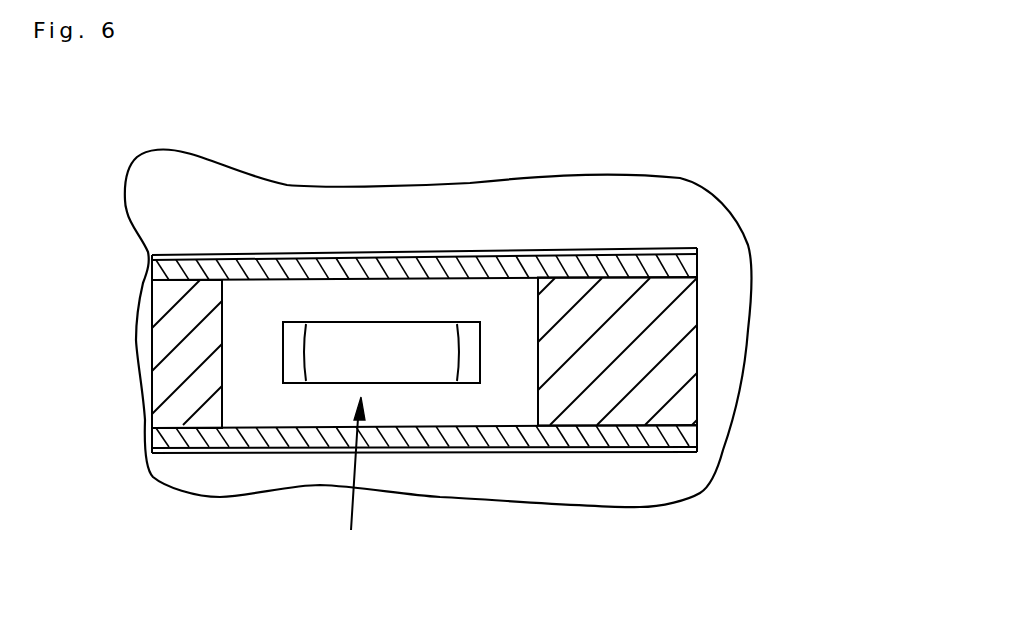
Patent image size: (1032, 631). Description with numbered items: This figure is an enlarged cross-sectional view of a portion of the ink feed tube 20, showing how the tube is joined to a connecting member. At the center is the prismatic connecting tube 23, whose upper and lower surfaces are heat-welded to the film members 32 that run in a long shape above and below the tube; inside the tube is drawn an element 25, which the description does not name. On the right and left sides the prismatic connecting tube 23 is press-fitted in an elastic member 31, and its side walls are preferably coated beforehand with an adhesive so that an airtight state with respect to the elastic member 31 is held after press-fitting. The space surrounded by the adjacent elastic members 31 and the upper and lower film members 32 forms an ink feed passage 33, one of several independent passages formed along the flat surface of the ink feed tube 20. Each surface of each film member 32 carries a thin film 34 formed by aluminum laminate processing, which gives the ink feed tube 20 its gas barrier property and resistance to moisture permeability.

The ink feed tube 20 is at (777, 388).
The prismatic connecting tube 23 is at (258, 303).
The acoustic wave element 25 is at (367, 342).
The elastic member 31 is at (165, 379).
The film member 32 is at (555, 267).
The ink feed passage 33 is at (332, 489).
The thin film 34 is at (636, 249).